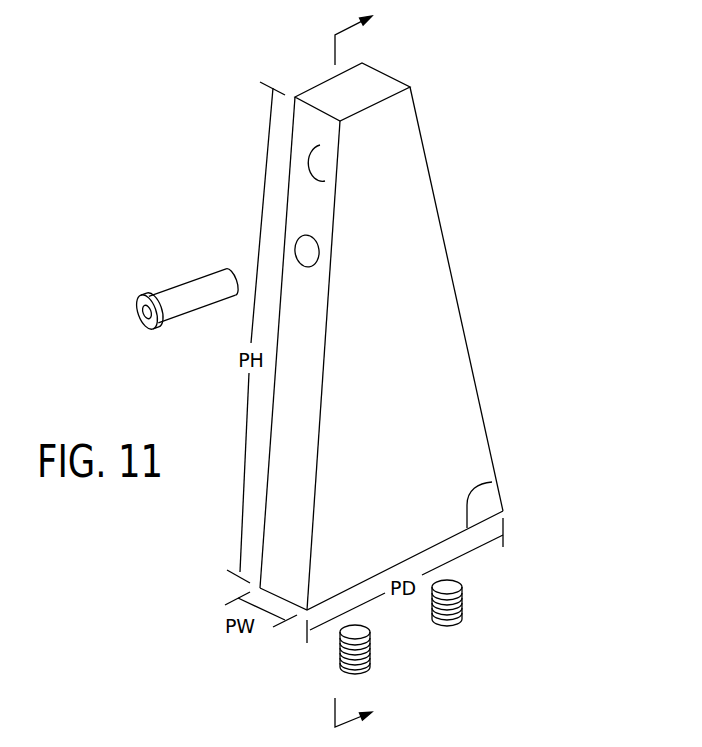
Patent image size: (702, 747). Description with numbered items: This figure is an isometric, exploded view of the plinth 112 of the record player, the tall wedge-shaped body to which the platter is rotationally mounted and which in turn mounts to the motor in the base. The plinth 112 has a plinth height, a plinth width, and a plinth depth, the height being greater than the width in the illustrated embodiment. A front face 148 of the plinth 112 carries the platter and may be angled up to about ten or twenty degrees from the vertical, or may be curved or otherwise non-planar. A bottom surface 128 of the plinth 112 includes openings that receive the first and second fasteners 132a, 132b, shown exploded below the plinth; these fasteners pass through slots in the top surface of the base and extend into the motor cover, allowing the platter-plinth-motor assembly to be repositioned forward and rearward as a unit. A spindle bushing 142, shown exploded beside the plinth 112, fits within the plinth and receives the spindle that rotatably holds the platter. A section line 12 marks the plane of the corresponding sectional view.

The section line 12 is at (368, 365).
The plinth 112 is at (373, 403).
The bottom surface 128 is at (492, 482).
The first fastener 132a is at (370, 652).
The second fastener 132b is at (462, 607).
The spindle bushing 142 is at (189, 290).
The front face 148 is at (325, 181).